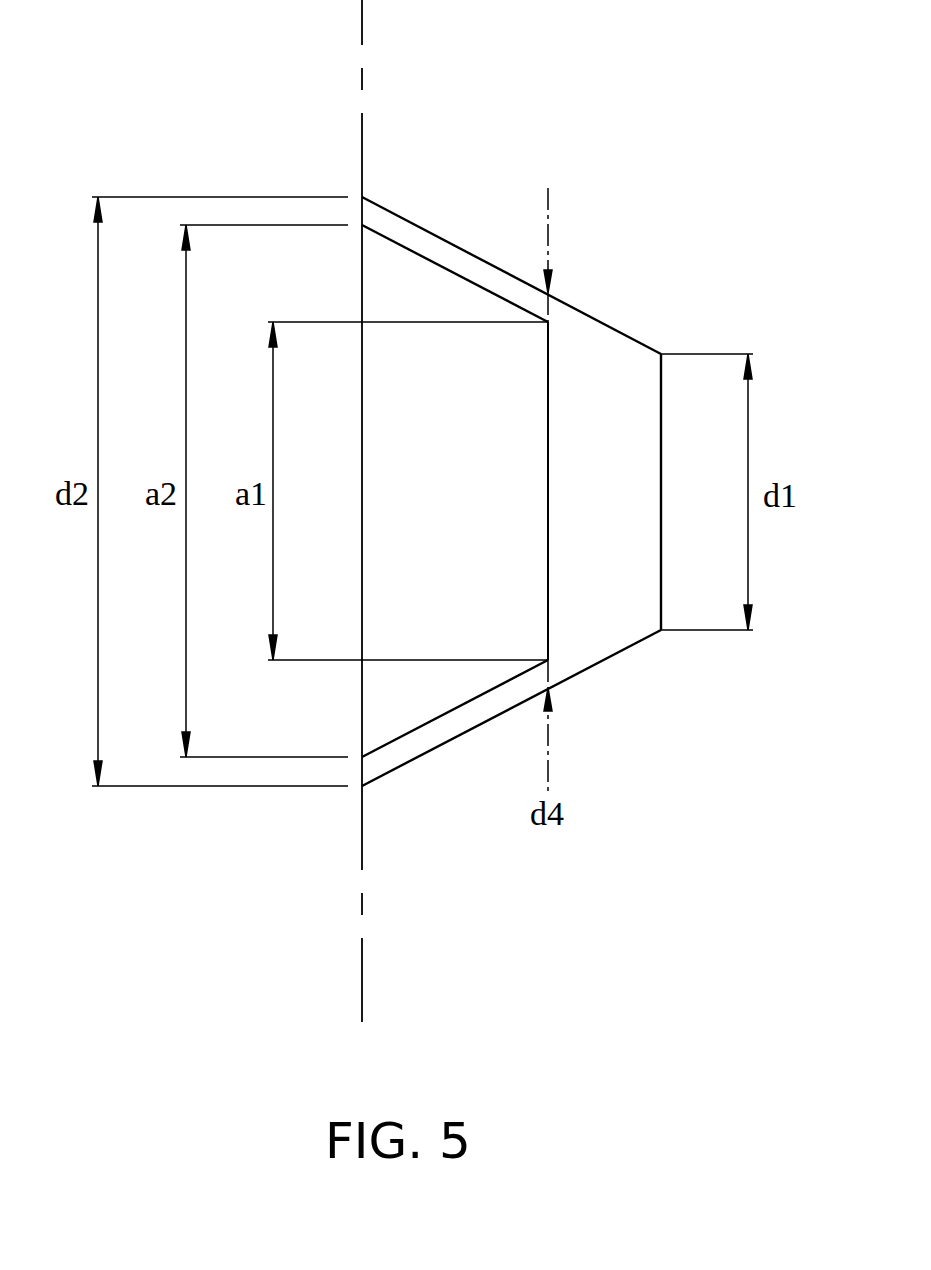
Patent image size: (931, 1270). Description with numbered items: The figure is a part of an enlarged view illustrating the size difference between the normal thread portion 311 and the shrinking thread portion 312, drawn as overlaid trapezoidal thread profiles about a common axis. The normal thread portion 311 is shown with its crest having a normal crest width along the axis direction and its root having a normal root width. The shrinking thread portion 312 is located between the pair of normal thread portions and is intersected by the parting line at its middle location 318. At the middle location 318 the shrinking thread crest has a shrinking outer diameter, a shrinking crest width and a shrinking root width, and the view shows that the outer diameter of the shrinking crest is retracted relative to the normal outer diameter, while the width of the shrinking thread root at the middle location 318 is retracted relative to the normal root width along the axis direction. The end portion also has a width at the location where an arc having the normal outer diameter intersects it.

The shrinking thread portion 312 is at (511, 429).
The middle location 318 is at (465, 278).
The normal thread portion 311 is at (632, 647).